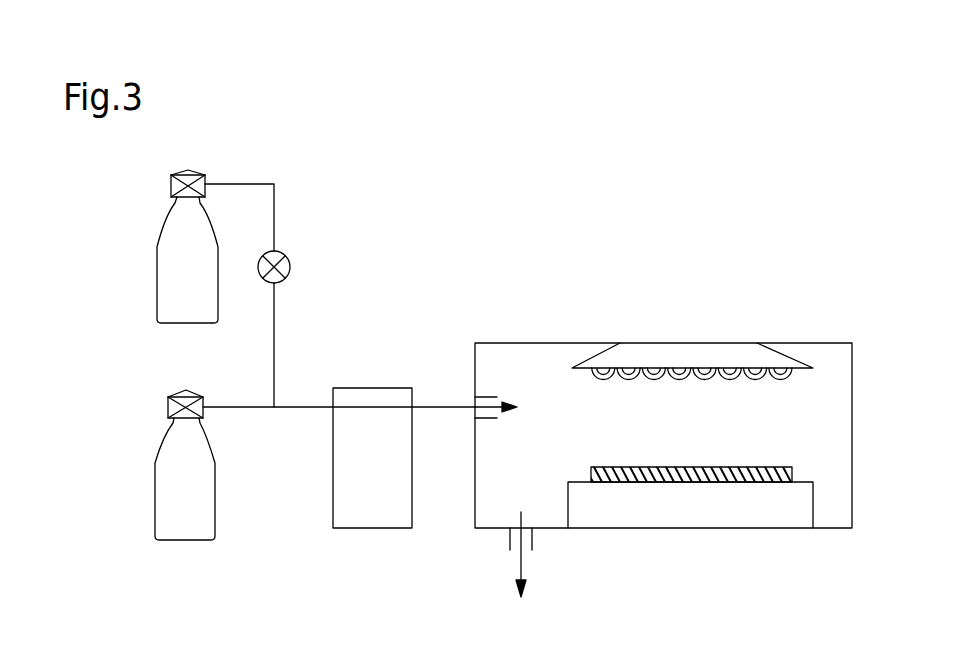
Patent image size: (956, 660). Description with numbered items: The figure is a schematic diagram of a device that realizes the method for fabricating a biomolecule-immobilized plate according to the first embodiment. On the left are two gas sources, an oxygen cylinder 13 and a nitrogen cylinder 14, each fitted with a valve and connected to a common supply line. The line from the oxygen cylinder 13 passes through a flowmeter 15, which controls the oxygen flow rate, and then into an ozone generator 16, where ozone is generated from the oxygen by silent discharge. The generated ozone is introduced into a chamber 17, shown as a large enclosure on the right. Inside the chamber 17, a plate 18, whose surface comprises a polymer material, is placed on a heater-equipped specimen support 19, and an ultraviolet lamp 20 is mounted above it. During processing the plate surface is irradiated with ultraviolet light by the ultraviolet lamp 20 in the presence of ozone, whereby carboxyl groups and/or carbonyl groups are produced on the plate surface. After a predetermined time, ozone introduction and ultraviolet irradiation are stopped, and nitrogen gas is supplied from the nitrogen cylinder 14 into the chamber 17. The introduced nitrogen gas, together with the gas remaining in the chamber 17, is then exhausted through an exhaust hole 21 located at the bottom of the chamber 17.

The oxygen cylinder 13 is at (158, 246).
The nitrogen cylinder 14 is at (157, 465).
The flowmeter 15 is at (290, 267).
The ozone generator 16 is at (390, 387).
The chamber 17 is at (832, 385).
The plate 18 is at (723, 476).
The heater-equipped specimen support 19 is at (787, 518).
The ultraviolet lamp 20 is at (647, 355).
The exhaust hole 21 is at (533, 543).